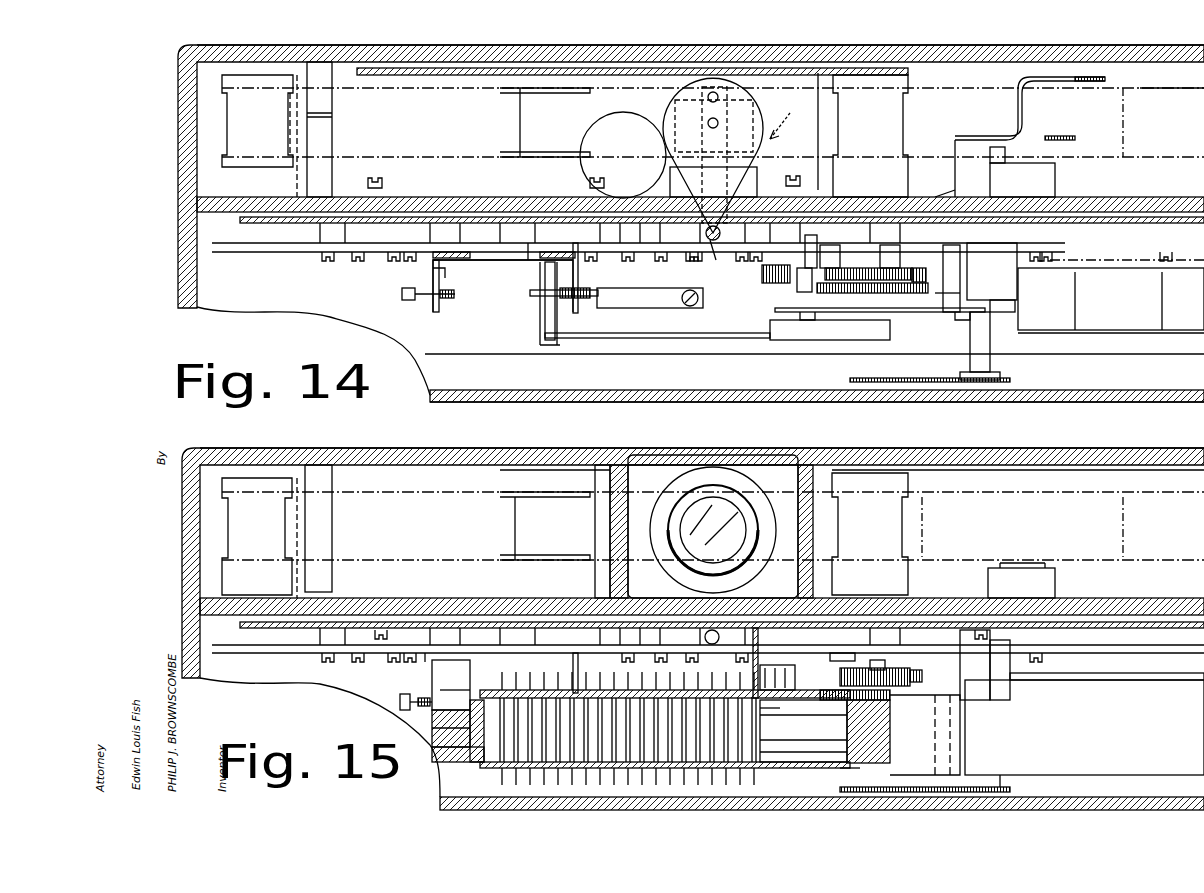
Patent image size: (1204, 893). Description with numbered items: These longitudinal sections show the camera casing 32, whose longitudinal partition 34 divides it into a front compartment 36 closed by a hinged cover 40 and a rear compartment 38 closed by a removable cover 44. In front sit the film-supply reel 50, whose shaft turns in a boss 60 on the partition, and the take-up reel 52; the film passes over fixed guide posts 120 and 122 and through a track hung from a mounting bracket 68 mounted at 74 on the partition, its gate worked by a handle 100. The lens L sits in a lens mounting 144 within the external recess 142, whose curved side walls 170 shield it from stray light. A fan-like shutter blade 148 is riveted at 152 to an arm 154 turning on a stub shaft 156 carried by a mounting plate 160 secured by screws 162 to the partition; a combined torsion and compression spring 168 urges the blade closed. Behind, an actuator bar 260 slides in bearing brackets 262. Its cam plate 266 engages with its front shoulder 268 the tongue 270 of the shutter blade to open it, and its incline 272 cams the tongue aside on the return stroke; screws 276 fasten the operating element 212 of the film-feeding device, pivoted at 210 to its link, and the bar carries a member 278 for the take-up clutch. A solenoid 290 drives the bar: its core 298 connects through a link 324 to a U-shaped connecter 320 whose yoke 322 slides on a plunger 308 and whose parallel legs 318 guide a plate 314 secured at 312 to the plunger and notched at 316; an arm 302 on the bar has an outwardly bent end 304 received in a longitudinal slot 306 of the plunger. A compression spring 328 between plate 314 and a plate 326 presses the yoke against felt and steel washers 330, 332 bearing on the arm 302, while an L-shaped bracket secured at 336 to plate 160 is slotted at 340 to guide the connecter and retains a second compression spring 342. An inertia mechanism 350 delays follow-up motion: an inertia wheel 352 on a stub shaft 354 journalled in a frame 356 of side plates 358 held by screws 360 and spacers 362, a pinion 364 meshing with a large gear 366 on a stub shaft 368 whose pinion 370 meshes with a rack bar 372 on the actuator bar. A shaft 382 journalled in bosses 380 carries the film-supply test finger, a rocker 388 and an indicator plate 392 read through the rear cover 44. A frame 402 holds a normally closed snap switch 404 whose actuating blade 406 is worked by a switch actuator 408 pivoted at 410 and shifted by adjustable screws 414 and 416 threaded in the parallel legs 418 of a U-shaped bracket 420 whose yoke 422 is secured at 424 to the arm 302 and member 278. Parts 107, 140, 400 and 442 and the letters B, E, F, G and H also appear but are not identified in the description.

In FIG. 14, the casing 32 is at (177, 200).
In FIG. 15, the casing 32 is at (181, 556).
In FIG. 14, the longitudinal partition 34 is at (1105, 198).
In FIG. 15, the longitudinal partition 34 is at (1100, 599).
In FIG. 14, the front compartment 36 is at (618, 68).
In FIG. 14, the rear compartment 38 is at (480, 402).
In FIG. 14, the front cover 40 is at (722, 45).
In FIG. 15, the front cover 40 is at (598, 448).
In FIG. 14, the rear cover 44 is at (737, 402).
In FIG. 15, the rear cover 44 is at (732, 448).
In FIG. 14, the film-supply reel 50 is at (1166, 160).
In FIG. 15, the film-supply reel 50 is at (1060, 488).
In FIG. 14, the film take-up reel 52 is at (553, 180).
In FIG. 15, the film take-up reel 52 is at (550, 486).
In FIG. 14, the boss 60 is at (1057, 175).
In FIG. 15, the boss 60 is at (1057, 578).
In FIG. 14, the mounting bracket 68 is at (538, 223).
In FIG. 14, the mounting of bracket on partition 74 is at (382, 180).
In FIG. 14, the handle 100 is at (316, 75).
In FIG. 14, the cam lever 107 is at (750, 114).
In FIG. 14, the fixed guide post 120 is at (895, 130).
In FIG. 15, the fixed guide post 120 is at (895, 523).
In FIG. 14, the fixed guide post 122 is at (237, 122).
In FIG. 15, the fixed guide post 122 is at (237, 529).
In FIG. 15, the housing box 140 is at (645, 476).
In FIG. 15, the recess 142 is at (765, 476).
In FIG. 15, the lens mounting 144 is at (657, 568).
In FIG. 14, the shutter blade 148 is at (626, 113).
In FIG. 14, the rivets 152 is at (708, 122).
In FIG. 14, the arm 154 is at (730, 143).
In FIG. 14, the stub shaft 156 is at (714, 258).
In FIG. 15, the mounting plate 160 is at (848, 646).
In FIG. 15, the screws 162 is at (383, 640).
In FIG. 14, the combined torsion and compression spring 168 is at (713, 226).
In FIG. 15, the curved side walls 170 is at (625, 515).
In FIG. 14, the pivot connection 210 is at (742, 260).
In FIG. 14, the operating element 212 is at (412, 232).
In FIG. 15, the operating element 212 is at (412, 640).
In FIG. 14, the actuator bar 260 is at (530, 243).
In FIG. 15, the actuator bar 260 is at (425, 655).
In FIG. 14, the bearing brackets 262 is at (328, 252).
In FIG. 15, the bearing brackets 262 is at (328, 654).
In FIG. 14, the cam plate 266 is at (664, 260).
In FIG. 15, the cam plate 266 is at (666, 661).
In FIG. 14, the front shoulder 268 is at (692, 260).
In FIG. 15, the front shoulder 268 is at (698, 660).
In FIG. 15, the tongue 270 is at (742, 660).
In FIG. 14, the incline 272 is at (628, 260).
In FIG. 15, the incline 272 is at (630, 660).
In FIG. 14, the screws 276 is at (398, 262).
In FIG. 15, the screws 276 is at (395, 663).
In FIG. 14, the member 278 is at (577, 255).
In FIG. 15, the member 278 is at (575, 654).
In FIG. 15, the solenoid 290 is at (1084, 724).
In FIG. 15, the solenoid core 298 is at (945, 765).
In FIG. 14, the arm 302 is at (458, 255).
In FIG. 15, the arm 302 is at (416, 710).
In FIG. 15, the outwardly bent end 304 is at (445, 748).
In FIG. 15, the longitudinal slot 306 is at (446, 712).
In FIG. 15, the plunger 308 is at (490, 762).
In FIG. 15, the securing point of plate 312 is at (775, 745).
In FIG. 15, the plate 314 is at (775, 758).
In FIG. 15, the notches 316 is at (780, 706).
In FIG. 15, the parallel legs 318 is at (810, 782).
In FIG. 15, the U-shaped connecter 320 is at (828, 776).
In FIG. 15, the yoke 322 is at (474, 700).
In FIG. 15, the link 324 is at (882, 756).
In FIG. 15, the plate 326 is at (505, 690).
In FIG. 15, the compression spring 328 is at (775, 728).
In FIG. 15, the felt washer 330 is at (468, 690).
In FIG. 15, the steel washer 332 is at (468, 700).
In FIG. 15, the securing point of bracket 336 is at (760, 646).
In FIG. 15, the slot 340 is at (745, 786).
In FIG. 15, the compression spring 342 is at (590, 680).
In FIG. 14, the inertia mechanism 350 is at (912, 318).
In FIG. 14, the inertia wheel 352 is at (850, 330).
In FIG. 14, the stub shaft 354 is at (845, 288).
In FIG. 14, the frame 356 is at (945, 318).
In FIG. 14, the side plates 358 is at (926, 322).
In FIG. 15, the side plates 358 is at (905, 658).
In FIG. 14, the screws 360 is at (807, 320).
In FIG. 14, the spacers 362 is at (812, 242).
In FIG. 15, the spacers 362 is at (962, 676).
In FIG. 14, the pinion 364 is at (806, 291).
In FIG. 14, the gear 366 is at (918, 285).
In FIG. 15, the gear 366 is at (921, 676).
In FIG. 14, the stub shaft 368 is at (880, 262).
In FIG. 15, the stub shaft 368 is at (870, 672).
In FIG. 14, the pinion 370 is at (905, 266).
In FIG. 15, the pinion 370 is at (898, 690).
In FIG. 14, the rack bar 372 is at (770, 284).
In FIG. 15, the rack bar 372 is at (888, 720).
In FIG. 14, the bosses 380 is at (950, 190).
In FIG. 14, the shaft 382 is at (990, 348).
In FIG. 14, the rocker 388 is at (1000, 312).
In FIG. 14, the indicator plate 392 is at (1012, 379).
In FIG. 15, the indicator plate 392 is at (1012, 789).
In FIG. 14, the bracket 400 is at (1105, 77).
In FIG. 14, the frame 402 is at (578, 346).
In FIG. 14, the snap switch 404 is at (680, 334).
In FIG. 14, the actuating blade 406 is at (630, 300).
In FIG. 14, the switch actuator 408 is at (532, 294).
In FIG. 14, the pivot mounting 410 is at (545, 325).
In FIG. 14, the adjustable screw 414 is at (445, 300).
In FIG. 14, the adjustable screw 416 is at (573, 300).
In FIG. 14, the parallel legs 418 is at (433, 282).
In FIG. 14, the U-shaped bracket 420 is at (502, 255).
In FIG. 14, the yoke 422 is at (480, 262).
In FIG. 14, the securing point of yoke 424 is at (440, 271).
In FIG. 14, the block 442 is at (1150, 331).
In FIG. 14, the direction arrow B is at (785, 120).
In FIG. 14, the section mark E is at (512, 268).
In FIG. 15, the section mark F is at (954, 674).
In FIG. 14, the section mark G is at (846, 378).
In FIG. 14, the section mark H is at (713, 331).
In FIG. 15, the camera lens L is at (735, 522).